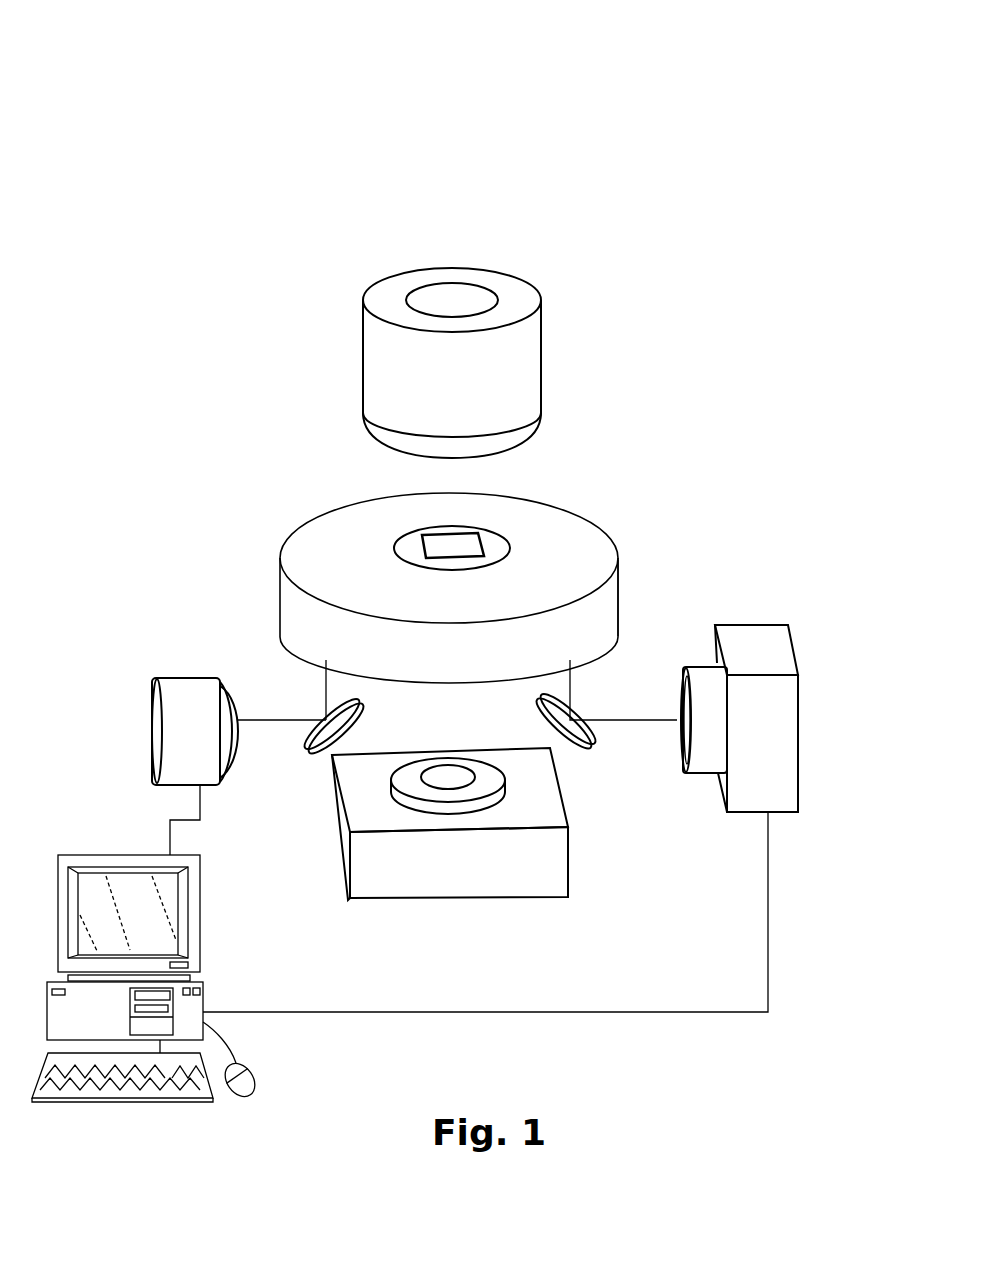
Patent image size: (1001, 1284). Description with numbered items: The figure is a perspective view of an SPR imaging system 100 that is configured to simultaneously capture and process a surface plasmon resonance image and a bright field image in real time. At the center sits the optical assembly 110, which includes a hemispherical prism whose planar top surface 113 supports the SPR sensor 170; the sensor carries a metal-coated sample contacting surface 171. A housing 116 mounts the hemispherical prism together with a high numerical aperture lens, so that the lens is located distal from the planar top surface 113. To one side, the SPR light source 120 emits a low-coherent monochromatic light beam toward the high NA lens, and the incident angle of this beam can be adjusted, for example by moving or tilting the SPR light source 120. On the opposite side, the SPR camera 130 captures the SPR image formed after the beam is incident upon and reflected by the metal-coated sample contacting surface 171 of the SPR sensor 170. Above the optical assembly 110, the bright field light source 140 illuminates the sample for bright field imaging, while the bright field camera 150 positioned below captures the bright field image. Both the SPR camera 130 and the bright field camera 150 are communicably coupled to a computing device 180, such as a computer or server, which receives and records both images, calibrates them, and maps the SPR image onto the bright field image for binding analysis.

The SPR imaging system 100 is at (216, 175).
The optical assembly 110 is at (634, 524).
The planar top surface 113 is at (497, 545).
The housing 116 is at (620, 593).
The SPR light source 120 is at (168, 730).
The SPR camera 130 is at (767, 728).
The bright field light source 140 is at (533, 323).
The bright field camera 150 is at (540, 885).
The surface-plasmon-resonance (SPR) sensor 170 is at (430, 512).
The metal-coated sample contacting surface 171 is at (433, 545).
The computing device 180 is at (205, 992).